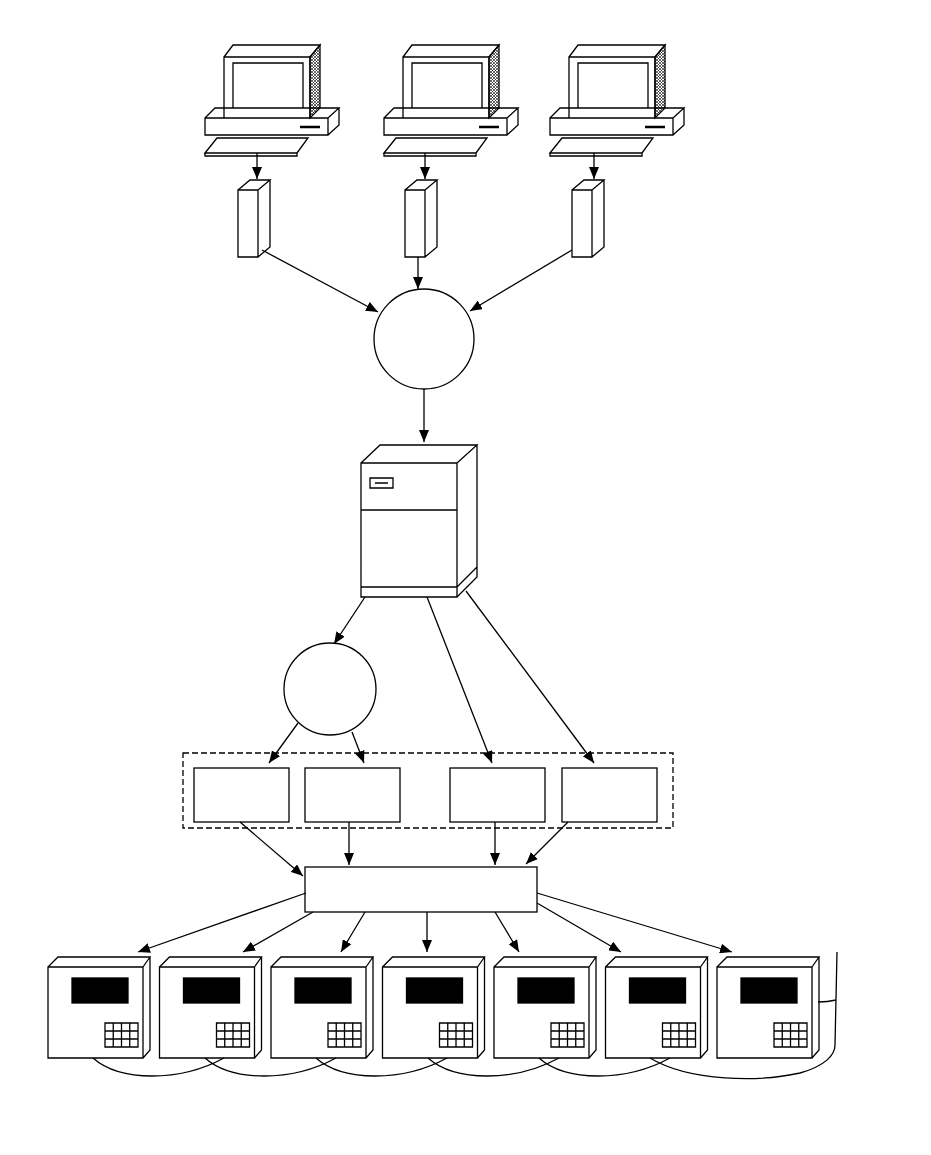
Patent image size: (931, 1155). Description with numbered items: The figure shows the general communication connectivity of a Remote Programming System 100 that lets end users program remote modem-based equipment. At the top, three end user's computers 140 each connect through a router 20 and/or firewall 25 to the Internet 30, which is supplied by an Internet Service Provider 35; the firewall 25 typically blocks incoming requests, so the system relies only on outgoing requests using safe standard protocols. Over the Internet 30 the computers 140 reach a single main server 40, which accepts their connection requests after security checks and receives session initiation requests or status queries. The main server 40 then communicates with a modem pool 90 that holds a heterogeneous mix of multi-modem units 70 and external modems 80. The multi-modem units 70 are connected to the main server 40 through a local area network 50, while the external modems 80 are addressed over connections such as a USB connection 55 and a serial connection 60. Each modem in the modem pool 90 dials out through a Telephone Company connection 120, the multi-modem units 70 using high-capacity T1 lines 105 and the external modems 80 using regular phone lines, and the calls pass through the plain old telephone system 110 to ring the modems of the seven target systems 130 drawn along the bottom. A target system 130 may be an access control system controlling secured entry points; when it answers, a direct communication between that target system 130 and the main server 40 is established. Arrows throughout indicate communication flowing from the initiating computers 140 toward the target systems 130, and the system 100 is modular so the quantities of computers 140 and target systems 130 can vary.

The Remote Programming System 100 is at (135, 122).
The end user's computer 140 is at (320, 73).
The router 20 is at (494, 226).
The firewall 25 is at (525, 272).
The Internet connection 30 is at (390, 340).
The Internet Service Provider 35 is at (543, 360).
The main server 40 is at (478, 553).
The local area network 50 is at (317, 668).
The USB connection 55 is at (420, 663).
The RS-232 connection 60 is at (565, 656).
The multi-modem server unit 70 is at (378, 773).
The external modem 80 is at (620, 775).
The modem pool 90 is at (453, 775).
The T1 line 105 is at (378, 838).
The plain old telephone system 110 is at (613, 842).
The Telephone Company connection 120 is at (540, 878).
The target system 130 is at (458, 995).